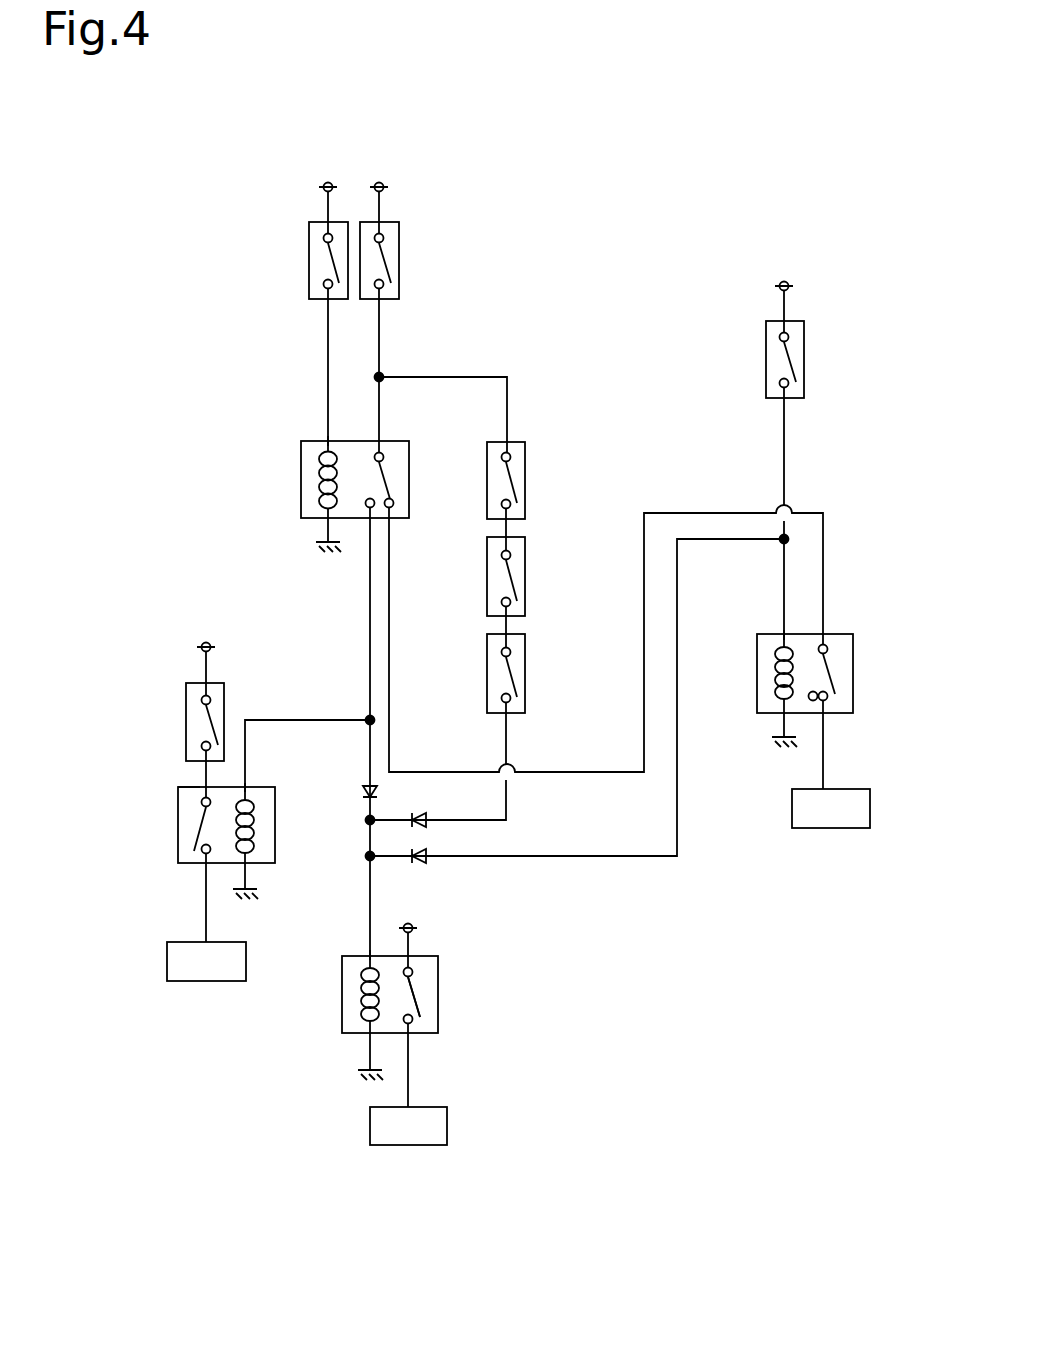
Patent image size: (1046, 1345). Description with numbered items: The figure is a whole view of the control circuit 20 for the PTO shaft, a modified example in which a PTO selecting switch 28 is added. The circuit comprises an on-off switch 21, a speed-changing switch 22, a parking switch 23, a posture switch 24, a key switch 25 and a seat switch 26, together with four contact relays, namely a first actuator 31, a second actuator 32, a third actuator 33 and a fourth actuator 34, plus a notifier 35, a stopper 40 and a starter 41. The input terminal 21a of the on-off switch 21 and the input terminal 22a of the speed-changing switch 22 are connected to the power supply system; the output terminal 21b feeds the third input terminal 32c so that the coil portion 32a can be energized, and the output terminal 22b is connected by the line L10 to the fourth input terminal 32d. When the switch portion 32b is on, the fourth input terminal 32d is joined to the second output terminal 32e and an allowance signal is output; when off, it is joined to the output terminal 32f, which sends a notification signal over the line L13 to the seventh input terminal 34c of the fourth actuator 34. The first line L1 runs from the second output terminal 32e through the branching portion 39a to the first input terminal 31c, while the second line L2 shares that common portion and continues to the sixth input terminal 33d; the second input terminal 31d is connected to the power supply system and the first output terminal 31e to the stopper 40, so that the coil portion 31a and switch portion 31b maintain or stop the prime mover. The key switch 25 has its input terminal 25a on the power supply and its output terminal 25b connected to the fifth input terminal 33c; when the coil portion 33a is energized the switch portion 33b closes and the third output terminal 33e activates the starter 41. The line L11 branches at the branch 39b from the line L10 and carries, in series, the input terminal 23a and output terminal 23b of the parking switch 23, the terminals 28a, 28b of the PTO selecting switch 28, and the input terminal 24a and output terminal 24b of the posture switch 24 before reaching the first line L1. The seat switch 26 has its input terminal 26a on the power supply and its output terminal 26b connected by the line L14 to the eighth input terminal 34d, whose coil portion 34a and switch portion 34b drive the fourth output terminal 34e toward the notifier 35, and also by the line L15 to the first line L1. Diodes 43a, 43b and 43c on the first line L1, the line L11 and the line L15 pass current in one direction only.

The control circuit 20 is at (649, 206).
The on-off switch 21 is at (309, 232).
The input terminal 21a is at (325, 235).
The output terminal 21b is at (324, 284).
The speed-changing switch 22 is at (399, 258).
The input terminal 22a is at (381, 236).
The output terminal 22b is at (381, 290).
The parking switch 23 is at (525, 460).
The input terminal 23a is at (508, 455).
The output terminal 23b is at (508, 506).
The posture switch 24 is at (525, 676).
The input terminal 24a is at (508, 654).
The output terminal 24b is at (508, 700).
The key switch 25 is at (186, 716).
The input terminal 25a is at (204, 698).
The output terminal 25b is at (204, 746).
The seat switch 26 is at (804, 352).
The input terminal 26a is at (786, 335).
The output terminal 26b is at (786, 388).
The PTO selecting switch 28 is at (525, 580).
The input terminal 28a is at (508, 557).
The input terminal 28b is at (508, 604).
The first actuator 31 is at (438, 1012).
The coil portion 31a is at (362, 1000).
The switch portion 31b is at (438, 985).
The first input terminal 31c is at (369, 952).
The second input terminal 31d is at (410, 948).
The first output terminal 31e is at (410, 1033).
The second actuator 32 is at (301, 498).
The coil portion 32a is at (320, 470).
The switch portion 32b is at (385, 480).
The third input terminal 32c is at (326, 441).
The fourth input terminal 32d is at (455, 422).
The second output terminal 32e is at (372, 508).
The output terminal 32f is at (391, 508).
The third actuator 33 is at (178, 845).
The coil portion 33a is at (254, 812).
The switch portion 33b is at (203, 805).
The fifth input terminal 33c is at (178, 790).
The sixth input terminal 33d is at (247, 785).
The third output terminal 33e is at (206, 865).
The fourth actuator 34 is at (853, 660).
The coil portion 34a is at (775, 675).
The switch portion 34b is at (853, 694).
The seventh input terminal 34c is at (824, 633).
The eighth input terminal 34d is at (783, 633).
The fourth output terminal 34e is at (826, 713).
The notifier 35 is at (853, 828).
The stopper 40 is at (432, 1145).
The starter 41 is at (218, 981).
The branching portion 39a is at (368, 718).
The branch 39b is at (375, 377).
The diode 43a is at (378, 790).
The diode 43b is at (424, 826).
The diode 43c is at (424, 862).
The first line L1 is at (370, 690).
The second line L2 is at (246, 718).
The line L10 is at (380, 360).
The line L11 is at (507, 368).
The line L13 is at (823, 513).
The line L14 is at (785, 455).
The line L15 is at (668, 863).